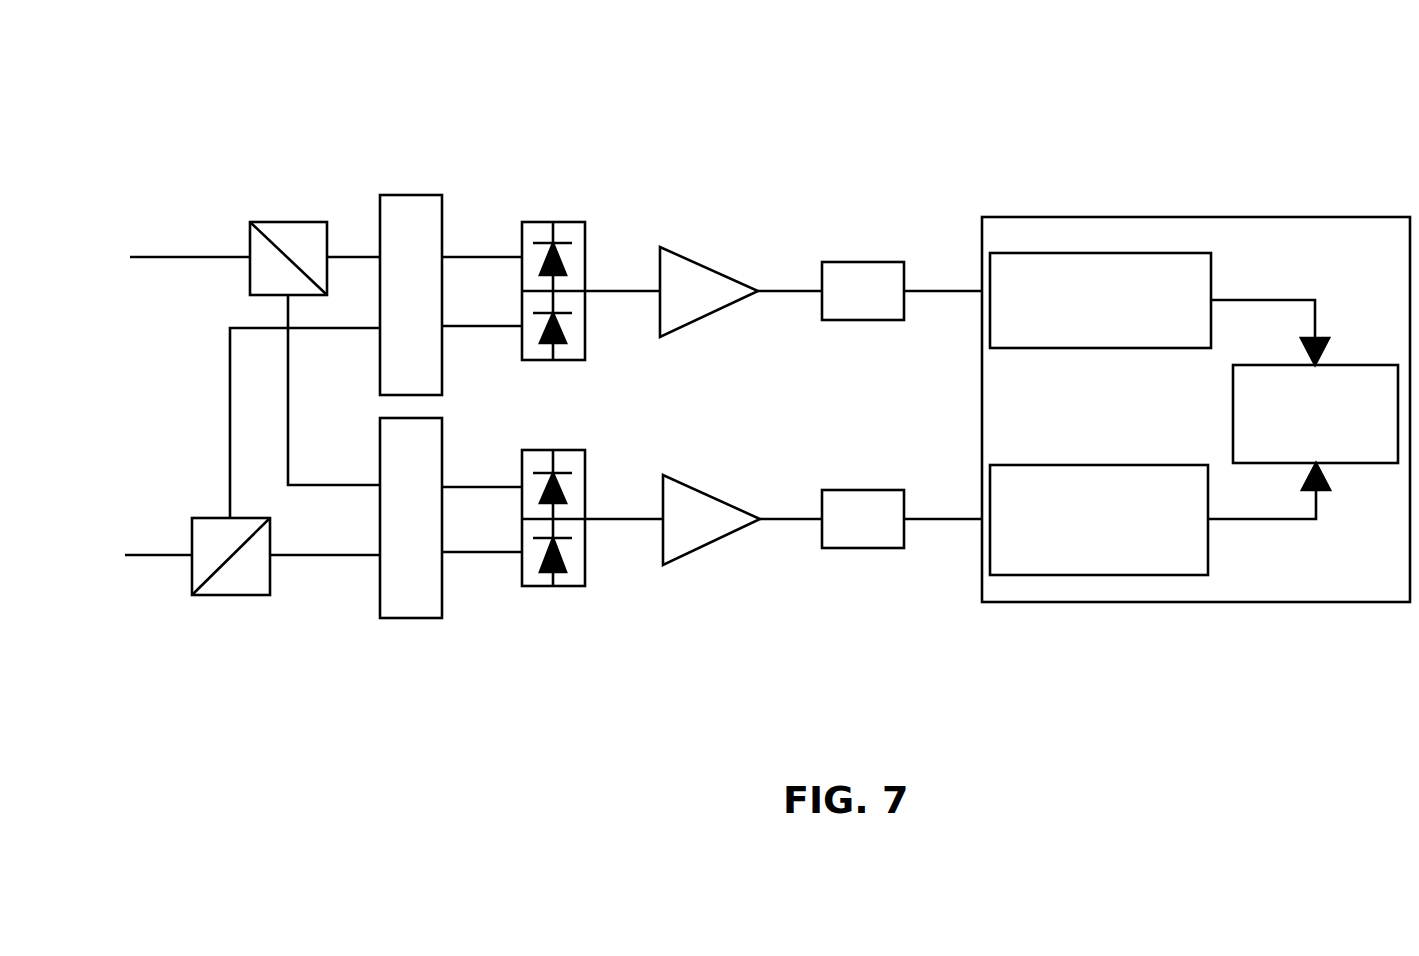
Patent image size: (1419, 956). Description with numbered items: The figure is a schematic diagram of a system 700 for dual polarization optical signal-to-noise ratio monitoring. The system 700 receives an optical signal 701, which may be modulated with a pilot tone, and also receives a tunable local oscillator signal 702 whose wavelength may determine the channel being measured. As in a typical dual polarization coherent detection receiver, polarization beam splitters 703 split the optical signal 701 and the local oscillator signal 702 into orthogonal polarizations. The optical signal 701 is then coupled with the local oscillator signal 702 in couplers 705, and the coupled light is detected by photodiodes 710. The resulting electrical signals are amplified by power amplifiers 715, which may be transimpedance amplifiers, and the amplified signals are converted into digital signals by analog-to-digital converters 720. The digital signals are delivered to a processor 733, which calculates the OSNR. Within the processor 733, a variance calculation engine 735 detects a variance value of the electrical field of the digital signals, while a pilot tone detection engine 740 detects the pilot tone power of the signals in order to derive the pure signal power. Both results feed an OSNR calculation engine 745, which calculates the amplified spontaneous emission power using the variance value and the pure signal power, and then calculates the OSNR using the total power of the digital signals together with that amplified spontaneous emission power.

The system 700 is at (1232, 99).
The optical signal 701 is at (190, 240).
The tunable local oscillator signal 702 is at (158, 539).
The polarization beam splitters 703 is at (284, 222).
The couplers 705 is at (411, 406).
The photodiodes 710 is at (546, 222).
The power amplifiers 715 is at (710, 406).
The analog-to-digital converters 720 is at (863, 405).
The processor 733 is at (1196, 602).
The variance calculation engine 735 is at (1100, 300).
The pilot tone detection engine 740 is at (1099, 520).
The OSNR calculation engine 745 is at (1315, 414).